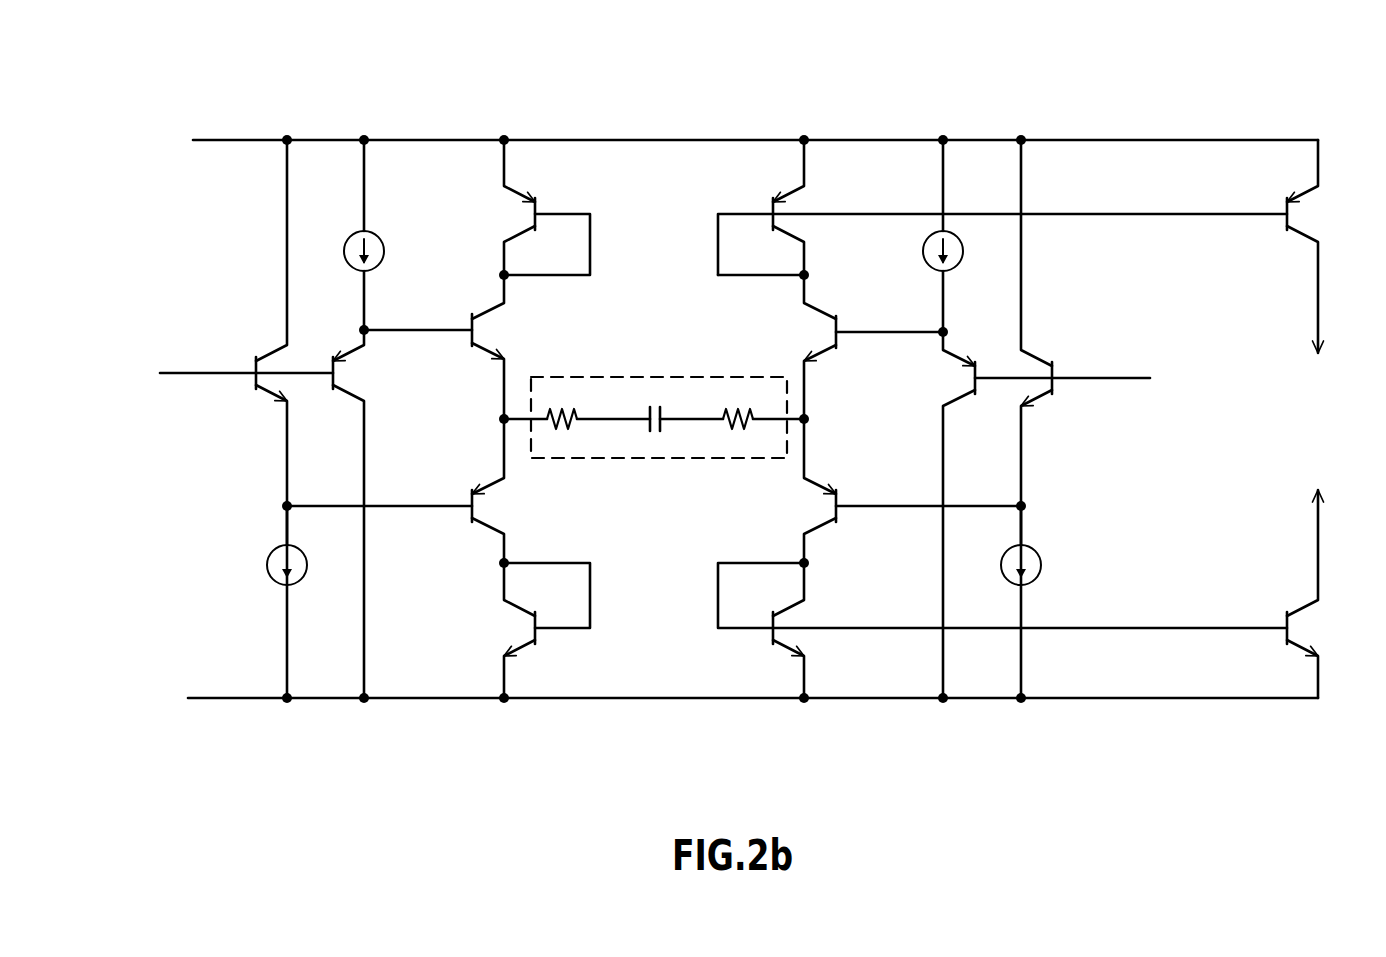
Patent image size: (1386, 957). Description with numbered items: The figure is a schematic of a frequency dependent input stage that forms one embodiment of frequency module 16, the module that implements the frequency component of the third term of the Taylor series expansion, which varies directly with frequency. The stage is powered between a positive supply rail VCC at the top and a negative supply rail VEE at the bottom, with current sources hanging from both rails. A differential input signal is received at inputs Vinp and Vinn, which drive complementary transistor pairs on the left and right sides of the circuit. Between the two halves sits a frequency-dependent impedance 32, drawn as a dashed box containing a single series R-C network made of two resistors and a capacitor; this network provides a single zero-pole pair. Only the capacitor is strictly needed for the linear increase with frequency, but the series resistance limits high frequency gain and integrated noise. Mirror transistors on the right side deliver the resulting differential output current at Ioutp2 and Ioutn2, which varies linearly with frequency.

The frequency module 16 is at (767, 108).
The frequency-dependent impedance 32 is at (661, 377).
The positive supply rail VCC is at (724, 140).
The negative supply rail VEE is at (716, 698).
The positive input Vinp is at (214, 380).
The negative input Vinn is at (1096, 381).
The positive output current Ioutp2 is at (1329, 264).
The negative output current Ioutn2 is at (1329, 572).